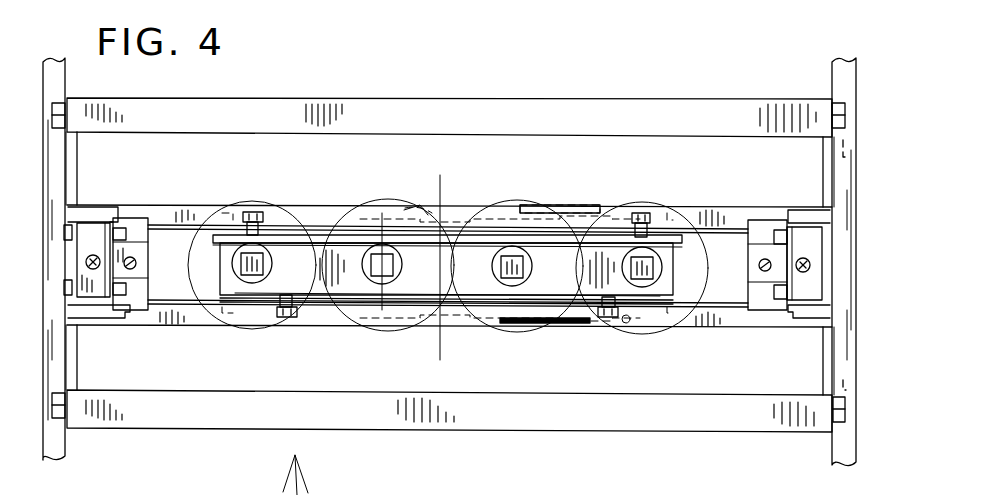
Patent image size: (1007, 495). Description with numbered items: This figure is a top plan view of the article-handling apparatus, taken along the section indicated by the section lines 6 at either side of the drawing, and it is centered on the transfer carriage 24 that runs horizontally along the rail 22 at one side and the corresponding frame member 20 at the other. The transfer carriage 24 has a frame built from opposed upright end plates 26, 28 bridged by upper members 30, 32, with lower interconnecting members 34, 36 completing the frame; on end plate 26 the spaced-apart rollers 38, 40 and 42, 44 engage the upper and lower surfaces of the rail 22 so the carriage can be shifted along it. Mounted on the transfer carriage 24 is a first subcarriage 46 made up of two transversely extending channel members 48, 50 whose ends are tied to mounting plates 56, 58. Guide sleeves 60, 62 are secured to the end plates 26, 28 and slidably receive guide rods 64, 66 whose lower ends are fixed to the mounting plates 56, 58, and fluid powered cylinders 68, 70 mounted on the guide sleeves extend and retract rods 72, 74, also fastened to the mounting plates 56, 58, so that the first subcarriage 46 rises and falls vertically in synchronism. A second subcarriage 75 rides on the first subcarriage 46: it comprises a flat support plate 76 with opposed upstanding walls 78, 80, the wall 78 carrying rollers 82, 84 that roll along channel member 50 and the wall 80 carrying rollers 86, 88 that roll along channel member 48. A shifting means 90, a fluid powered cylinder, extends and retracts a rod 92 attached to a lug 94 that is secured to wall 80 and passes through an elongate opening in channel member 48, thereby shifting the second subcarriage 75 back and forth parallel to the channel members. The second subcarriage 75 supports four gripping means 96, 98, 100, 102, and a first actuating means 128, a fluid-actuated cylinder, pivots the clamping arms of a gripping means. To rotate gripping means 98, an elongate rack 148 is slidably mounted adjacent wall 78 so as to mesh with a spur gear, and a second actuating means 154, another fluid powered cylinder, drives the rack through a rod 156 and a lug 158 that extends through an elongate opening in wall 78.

The section line 6- 6 is at (397, 182).
The left side frame member 20 is at (50, 277).
The rail 22 is at (868, 262).
The transfer carriage 24 is at (513, 88).
The end plate 26 is at (822, 175).
The end plate 28 is at (72, 172).
The upper member 30 is at (105, 312).
The upper member 32 is at (800, 215).
The lower interconnecting member 34 is at (617, 417).
The lower interconnecting member 36 is at (690, 108).
The roller 38 is at (845, 408).
The roller 40 is at (856, 388).
The roller 42 is at (838, 104).
The roller 44 is at (856, 152).
The first subcarriage 46 is at (455, 197).
The channel member 48 is at (715, 323).
The channel member 50 is at (705, 217).
The mounting plate 56 is at (758, 222).
The mounting plate 58 is at (140, 217).
The guide sleeve 60 is at (807, 248).
The guide sleeve 62 is at (93, 230).
The guide rod 64 is at (810, 268).
The guide rod 66 is at (87, 265).
The fluid powered cylinder 68 is at (760, 257).
The fluid powered cylinder 70 is at (147, 243).
The rod 72 is at (760, 267).
The rod 74 is at (137, 263).
The second subcarriage 75 is at (296, 267).
The support plate 76 is at (345, 297).
The upstanding wall 78 is at (290, 240).
The upstanding wall 80 is at (257, 300).
The roller 82 is at (255, 212).
The roller 84 is at (643, 217).
The roller 86 is at (287, 312).
The roller 88 is at (603, 330).
The shifting means 90 is at (545, 335).
The rod 92 is at (460, 327).
The lug 94 is at (375, 330).
The gripping means 96 is at (230, 336).
The gripping means 98 is at (353, 338).
The gripping means 100 is at (507, 343).
The gripping means 102 is at (665, 337).
The first actuating means 128 is at (513, 258).
The rack 148 is at (351, 238).
The second actuating means 154 is at (570, 198).
The rod 156 is at (450, 200).
The lug 158 is at (382, 197).